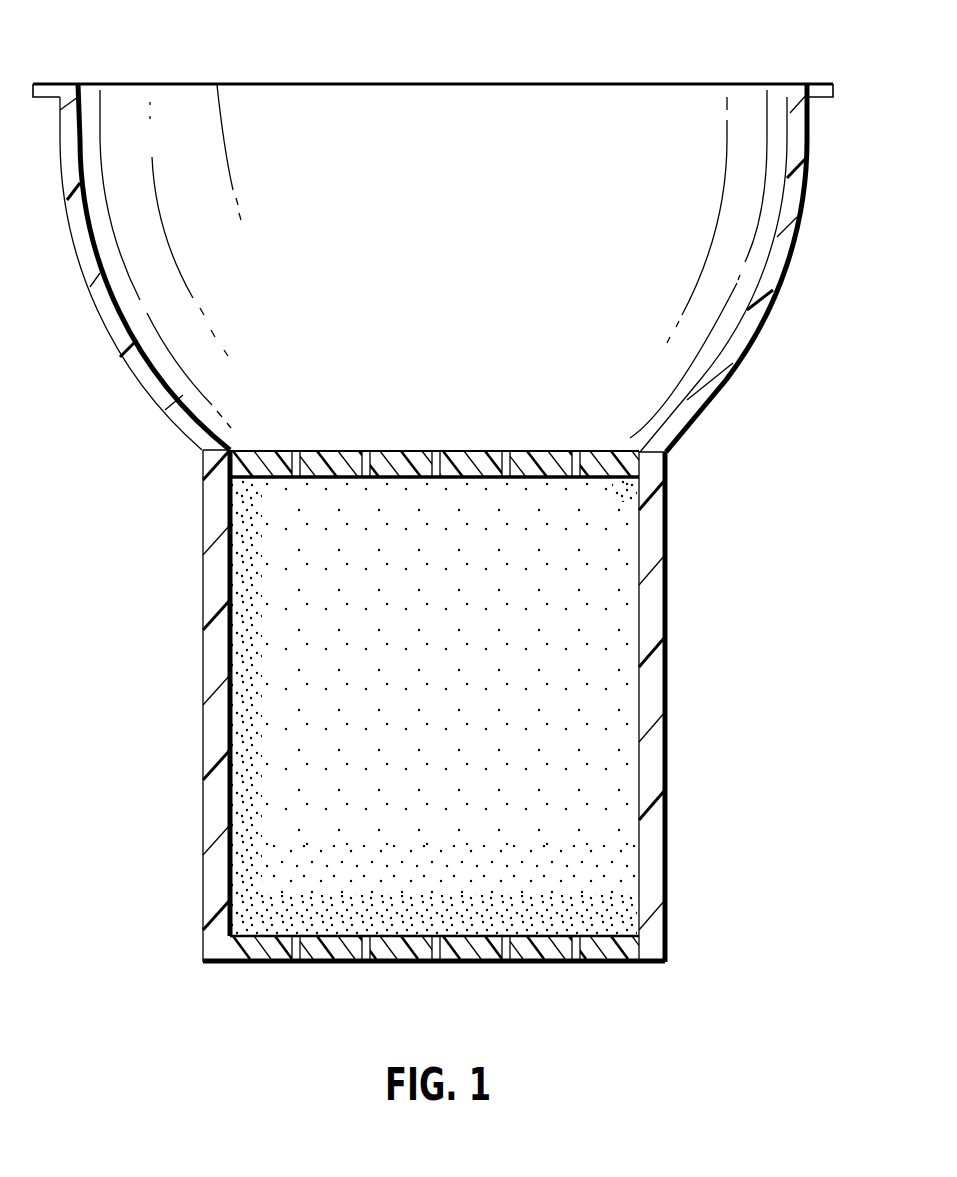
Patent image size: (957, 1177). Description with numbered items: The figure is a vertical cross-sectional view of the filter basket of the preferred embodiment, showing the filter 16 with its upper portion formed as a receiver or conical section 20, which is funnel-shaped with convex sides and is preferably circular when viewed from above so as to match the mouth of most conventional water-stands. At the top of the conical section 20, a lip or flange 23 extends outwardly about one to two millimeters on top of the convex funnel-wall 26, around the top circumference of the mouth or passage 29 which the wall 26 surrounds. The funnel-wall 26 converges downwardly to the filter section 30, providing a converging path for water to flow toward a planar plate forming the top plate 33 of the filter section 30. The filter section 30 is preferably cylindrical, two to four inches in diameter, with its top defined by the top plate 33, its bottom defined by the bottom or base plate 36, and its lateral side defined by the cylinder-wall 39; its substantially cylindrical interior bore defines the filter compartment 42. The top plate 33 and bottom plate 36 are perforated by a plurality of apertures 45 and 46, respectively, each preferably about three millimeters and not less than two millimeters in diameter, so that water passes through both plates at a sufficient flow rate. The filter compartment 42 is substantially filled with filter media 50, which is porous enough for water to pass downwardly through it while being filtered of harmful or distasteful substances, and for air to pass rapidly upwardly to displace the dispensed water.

The filter 16 is at (805, 66).
The receiver or conical section 20 is at (790, 313).
The lip or flange 23 is at (820, 96).
The convex funnel-wall 26 is at (802, 238).
The mouth or passage 29 is at (452, 102).
The filter section 30 is at (690, 796).
The top plate 33 is at (520, 450).
The bottom or base plate 36 is at (478, 966).
The cylinder-wall 39 is at (667, 732).
The filter compartment 42 is at (640, 478).
The apertures 45 is at (365, 450).
The apertures 46 is at (363, 967).
The filter media 50 is at (575, 635).